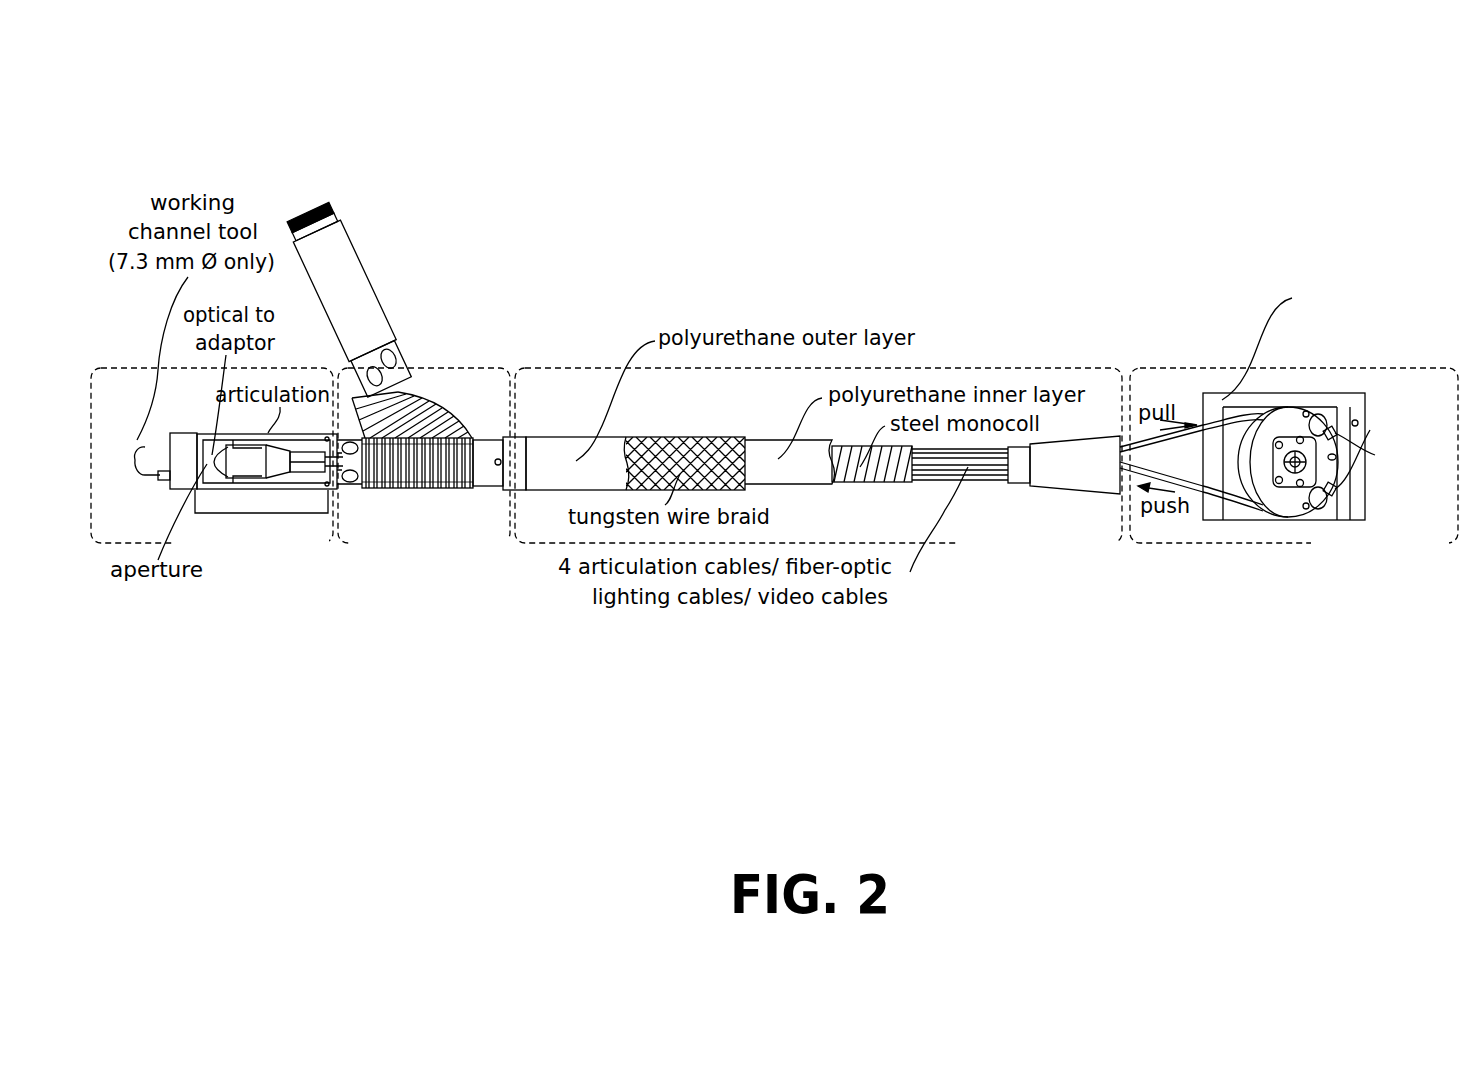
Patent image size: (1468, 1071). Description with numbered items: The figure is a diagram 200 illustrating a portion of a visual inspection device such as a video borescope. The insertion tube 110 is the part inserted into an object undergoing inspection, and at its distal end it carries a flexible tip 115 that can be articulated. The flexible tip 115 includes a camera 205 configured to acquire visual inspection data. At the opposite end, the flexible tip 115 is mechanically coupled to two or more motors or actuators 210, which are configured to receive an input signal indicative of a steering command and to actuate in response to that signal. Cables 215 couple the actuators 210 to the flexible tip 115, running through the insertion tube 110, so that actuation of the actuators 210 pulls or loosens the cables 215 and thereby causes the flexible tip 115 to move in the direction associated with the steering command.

The diagram 200 is at (210, 104).
The camera 205 is at (300, 192).
The flexible tip 115 is at (440, 325).
The insertion tube 110 is at (823, 440).
The cables 215 is at (930, 478).
The actuators 210 is at (1332, 382).